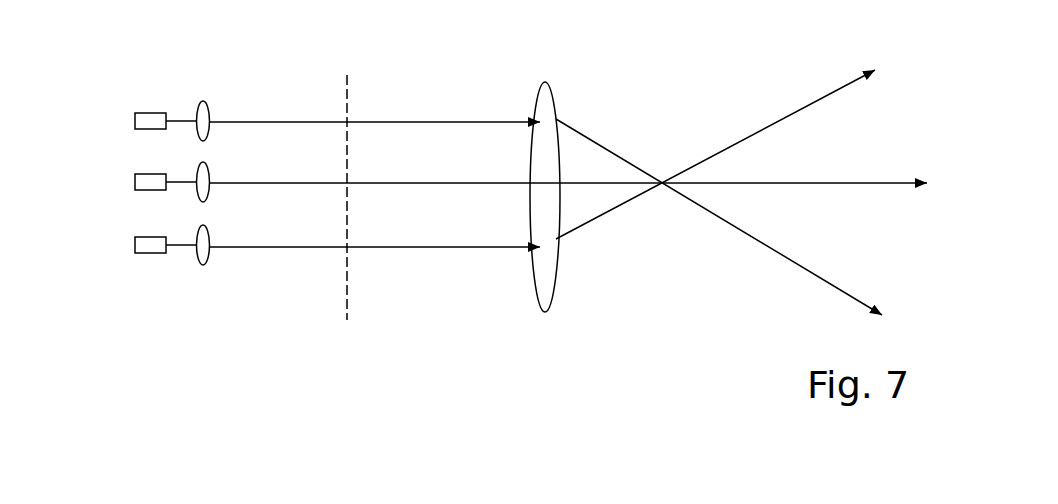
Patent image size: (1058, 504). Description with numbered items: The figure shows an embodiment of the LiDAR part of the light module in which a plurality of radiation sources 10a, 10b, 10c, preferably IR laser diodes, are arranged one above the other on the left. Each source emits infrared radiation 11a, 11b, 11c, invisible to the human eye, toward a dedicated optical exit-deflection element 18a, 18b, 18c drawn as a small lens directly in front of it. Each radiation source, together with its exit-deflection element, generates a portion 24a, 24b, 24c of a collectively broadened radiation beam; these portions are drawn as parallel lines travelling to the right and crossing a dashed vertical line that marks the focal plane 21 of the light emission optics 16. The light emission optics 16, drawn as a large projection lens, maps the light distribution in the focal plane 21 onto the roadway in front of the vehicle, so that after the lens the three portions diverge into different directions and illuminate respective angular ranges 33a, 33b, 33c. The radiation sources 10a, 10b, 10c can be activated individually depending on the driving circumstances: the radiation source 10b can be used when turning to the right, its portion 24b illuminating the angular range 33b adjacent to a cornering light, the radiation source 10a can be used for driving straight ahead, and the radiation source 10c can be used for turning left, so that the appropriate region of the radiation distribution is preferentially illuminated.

The radiation source 10a is at (133, 179).
The radiation source 10b is at (133, 118).
The radiation source 10c is at (133, 242).
The infrared radiation 11a is at (187, 182).
The infrared radiation 11b is at (187, 121).
The infrared radiation 11c is at (187, 245).
The light emission optics 16 is at (548, 275).
The optical exit-deflection element 18a is at (207, 177).
The optical exit-deflection element 18b is at (207, 110).
The optical exit-deflection element 18c is at (207, 253).
The focal plane 21 is at (348, 93).
The portion of radiation beam 24a is at (470, 182).
The portion of radiation beam 24b is at (427, 122).
The portion of radiation beam 24c is at (448, 248).
The angular range 33a is at (890, 180).
The angular range 33b is at (845, 290).
The angular range 33c is at (820, 98).